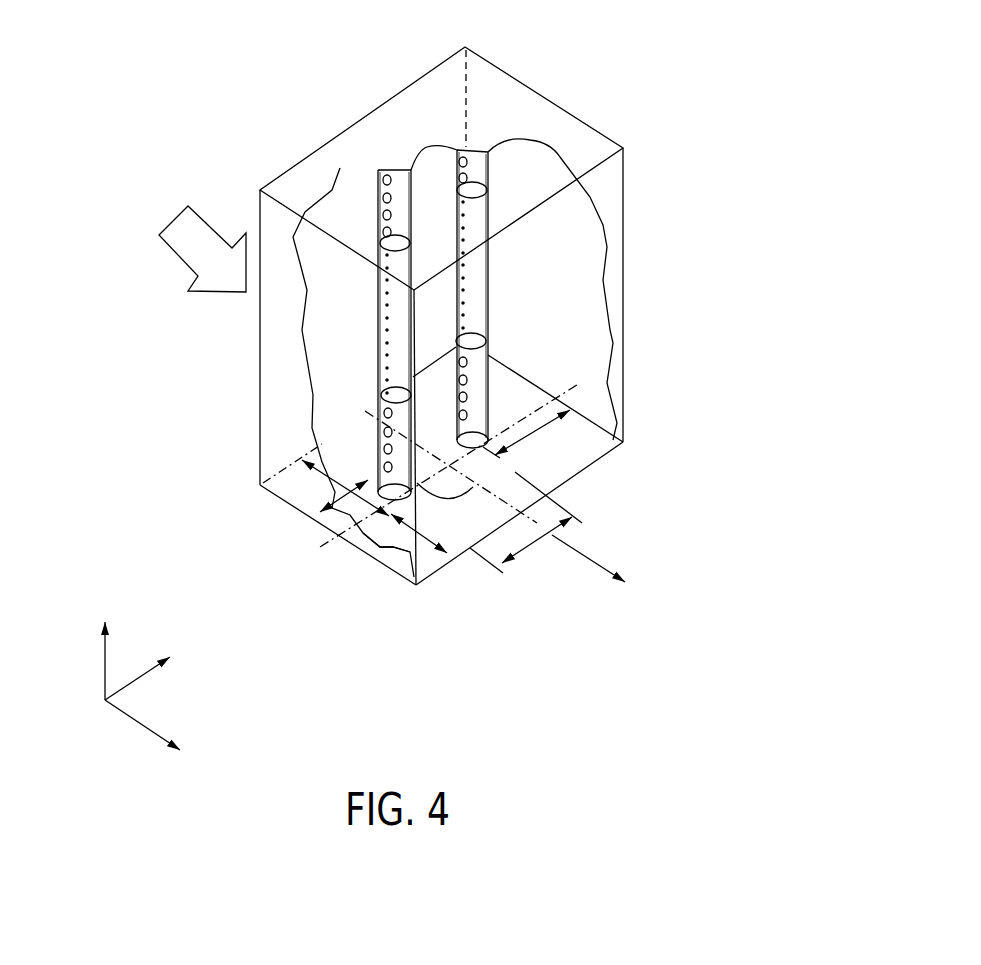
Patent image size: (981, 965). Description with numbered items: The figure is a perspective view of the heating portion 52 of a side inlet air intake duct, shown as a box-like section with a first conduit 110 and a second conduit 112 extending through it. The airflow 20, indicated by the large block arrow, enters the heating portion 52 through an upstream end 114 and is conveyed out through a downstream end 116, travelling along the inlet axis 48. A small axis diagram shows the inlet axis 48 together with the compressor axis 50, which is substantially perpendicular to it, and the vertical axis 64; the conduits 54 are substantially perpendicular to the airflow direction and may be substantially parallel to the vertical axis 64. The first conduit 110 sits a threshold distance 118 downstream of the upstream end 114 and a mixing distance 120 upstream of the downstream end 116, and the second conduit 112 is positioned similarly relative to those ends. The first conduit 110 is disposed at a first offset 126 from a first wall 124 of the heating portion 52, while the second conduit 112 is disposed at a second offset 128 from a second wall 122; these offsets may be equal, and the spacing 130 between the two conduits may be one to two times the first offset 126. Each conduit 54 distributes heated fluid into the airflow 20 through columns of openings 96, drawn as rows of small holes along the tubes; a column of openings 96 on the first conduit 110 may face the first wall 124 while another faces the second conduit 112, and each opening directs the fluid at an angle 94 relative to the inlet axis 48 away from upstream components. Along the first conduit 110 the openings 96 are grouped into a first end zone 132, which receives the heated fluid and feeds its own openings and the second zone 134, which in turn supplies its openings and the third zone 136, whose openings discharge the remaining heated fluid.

The airflow 20 is at (172, 222).
The inlet axis 48 is at (583, 552).
The compressor axis 50 is at (133, 680).
The heating portion 52 is at (624, 295).
The conduits 54 is at (456, 248).
The vertical axis 64 is at (103, 667).
The angle 94 is at (447, 498).
The openings 96 is at (372, 178).
The first conduit 110 is at (427, 165).
The second conduit 112 is at (488, 153).
The upstream end 114 is at (287, 463).
The downstream end 116 is at (613, 449).
The threshold distance 118 is at (300, 478).
The mixing distance 120 is at (388, 552).
The second wall 122 is at (605, 124).
The first wall 124 is at (282, 360).
The first offset 126 is at (338, 512).
The second offset 128 is at (511, 427).
The spacing 130 is at (543, 540).
The first end zone 132 is at (407, 430).
The second zone 134 is at (407, 347).
The third zone 136 is at (403, 185).